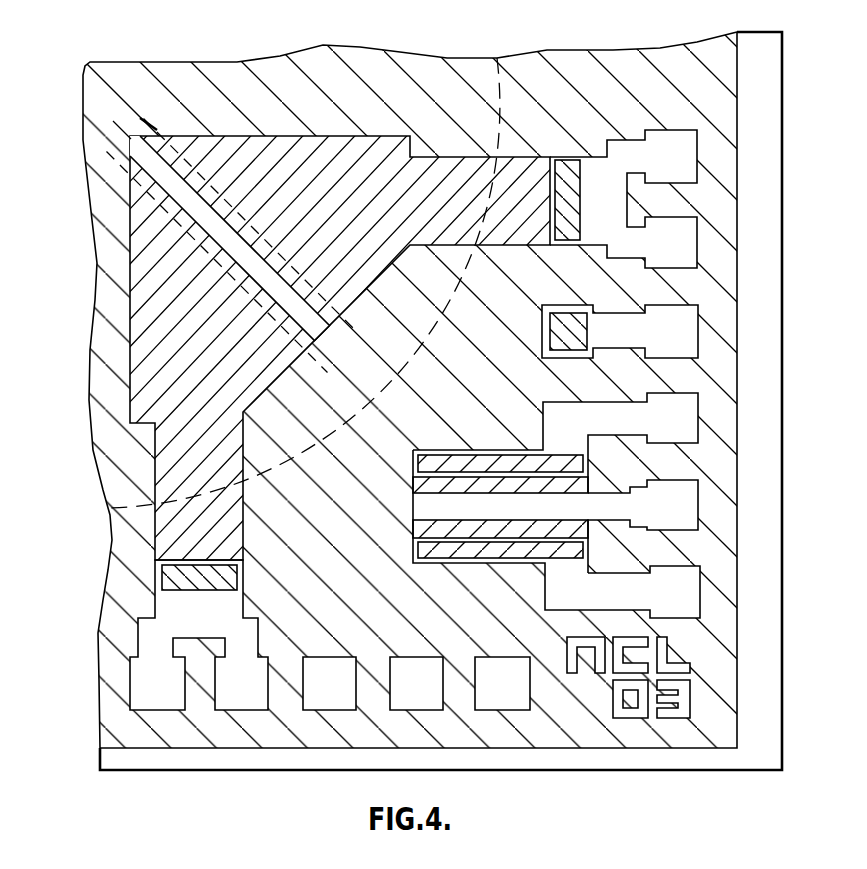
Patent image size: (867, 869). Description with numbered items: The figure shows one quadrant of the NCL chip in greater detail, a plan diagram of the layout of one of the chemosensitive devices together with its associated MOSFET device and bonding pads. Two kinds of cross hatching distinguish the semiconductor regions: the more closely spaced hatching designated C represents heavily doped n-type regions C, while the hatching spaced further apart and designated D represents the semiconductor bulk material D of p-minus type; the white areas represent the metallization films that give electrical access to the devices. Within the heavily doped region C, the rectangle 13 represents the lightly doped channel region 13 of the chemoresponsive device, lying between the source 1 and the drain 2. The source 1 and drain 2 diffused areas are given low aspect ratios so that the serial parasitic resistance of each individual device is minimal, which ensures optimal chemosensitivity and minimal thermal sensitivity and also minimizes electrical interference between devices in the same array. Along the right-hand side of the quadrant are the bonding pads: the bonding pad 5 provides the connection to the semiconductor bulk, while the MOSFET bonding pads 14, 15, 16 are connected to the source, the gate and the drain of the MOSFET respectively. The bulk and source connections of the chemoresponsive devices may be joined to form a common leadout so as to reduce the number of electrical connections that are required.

The source 1 is at (166, 696).
The drain 2 is at (663, 174).
The bonding pad for connection to the semiconductor bulk 5 is at (664, 346).
The lightly doped channel region 13 is at (132, 130).
The MOSFET bonding pad 14 is at (661, 435).
The MOSFET bonding pad 15 is at (661, 522).
The MOSFET bonding pad 16 is at (664, 607).
The heavily doped n-type regions C is at (261, 162).
The semiconductor bulk material D is at (411, 92).